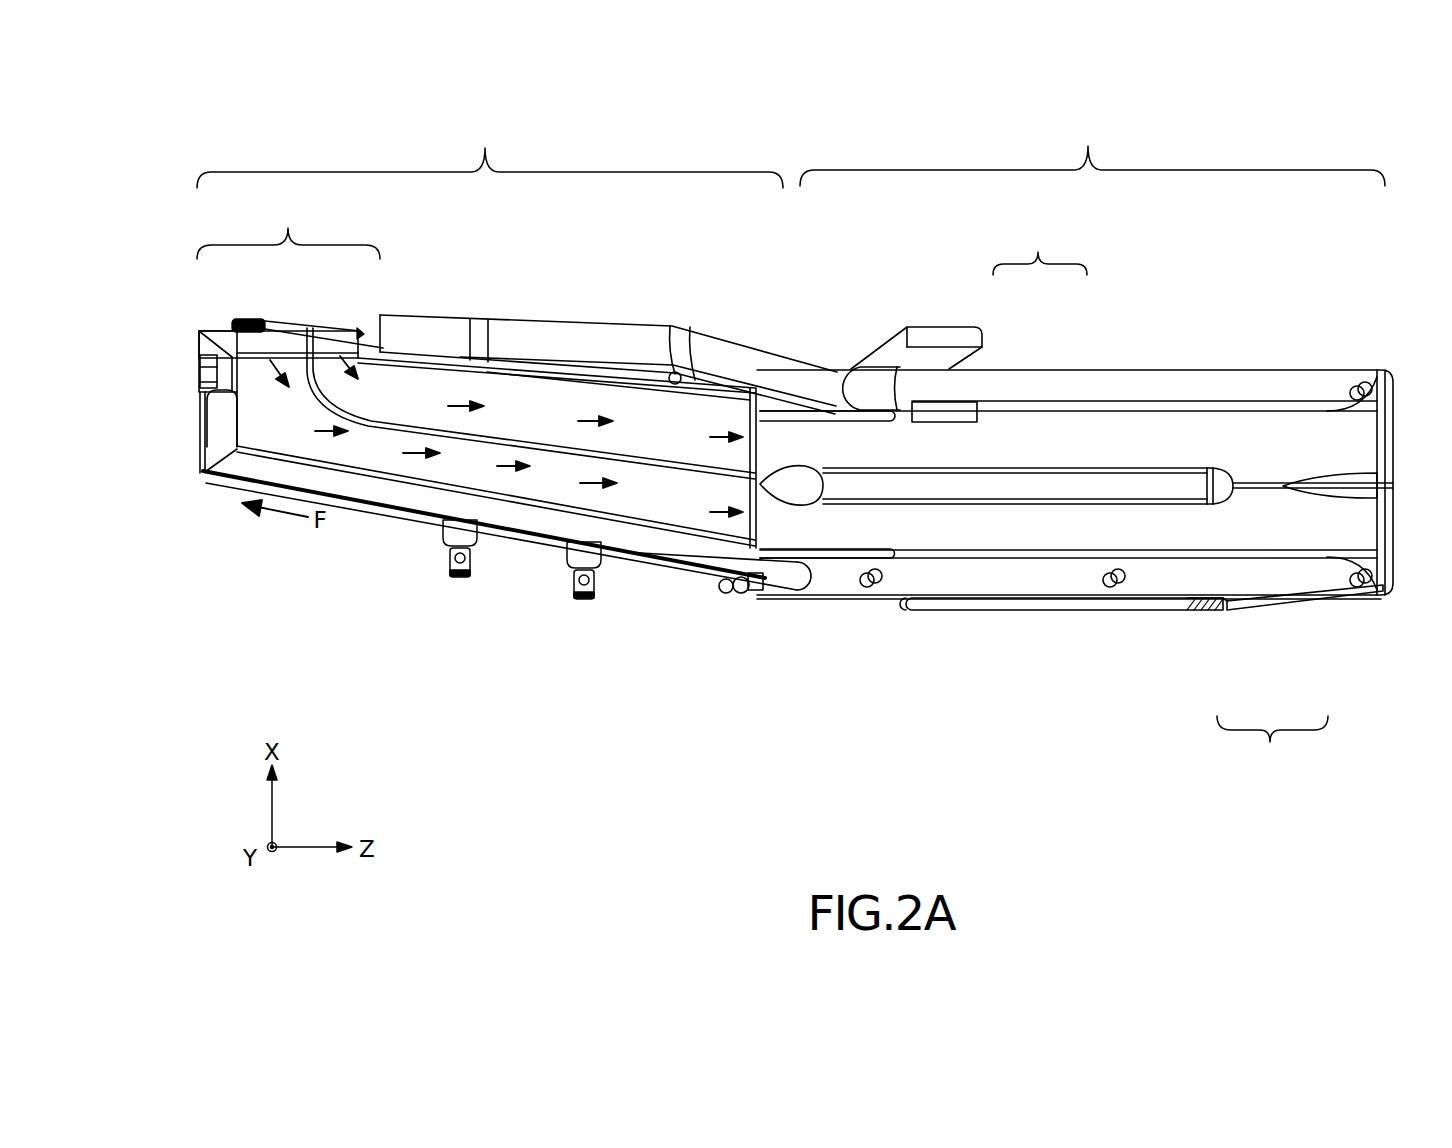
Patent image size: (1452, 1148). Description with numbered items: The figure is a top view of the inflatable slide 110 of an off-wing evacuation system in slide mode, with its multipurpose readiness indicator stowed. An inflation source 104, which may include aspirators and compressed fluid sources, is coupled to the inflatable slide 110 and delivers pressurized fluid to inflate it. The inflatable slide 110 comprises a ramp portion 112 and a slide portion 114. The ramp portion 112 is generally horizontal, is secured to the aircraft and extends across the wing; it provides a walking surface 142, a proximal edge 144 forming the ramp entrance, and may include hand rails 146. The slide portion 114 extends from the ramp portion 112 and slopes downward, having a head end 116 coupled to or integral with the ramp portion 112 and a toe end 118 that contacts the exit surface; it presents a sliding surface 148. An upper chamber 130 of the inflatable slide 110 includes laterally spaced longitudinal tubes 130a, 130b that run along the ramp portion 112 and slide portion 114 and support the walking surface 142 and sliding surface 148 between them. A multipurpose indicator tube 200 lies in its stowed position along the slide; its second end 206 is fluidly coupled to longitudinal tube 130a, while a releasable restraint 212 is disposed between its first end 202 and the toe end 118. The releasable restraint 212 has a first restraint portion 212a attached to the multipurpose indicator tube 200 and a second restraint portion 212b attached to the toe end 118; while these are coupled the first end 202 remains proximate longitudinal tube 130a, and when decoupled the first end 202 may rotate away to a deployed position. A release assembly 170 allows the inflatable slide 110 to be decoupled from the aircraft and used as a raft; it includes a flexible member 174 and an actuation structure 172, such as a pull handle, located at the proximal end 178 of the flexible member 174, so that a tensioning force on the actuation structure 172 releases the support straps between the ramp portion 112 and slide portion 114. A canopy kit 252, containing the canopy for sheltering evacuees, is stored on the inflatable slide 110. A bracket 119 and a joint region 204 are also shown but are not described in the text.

The inflatable slide 110 is at (258, 137).
The ramp portion 112 is at (490, 148).
The slide portion 114 is at (1092, 147).
The head end 116 is at (819, 530).
The toe end 118 is at (1397, 538).
The mounting bracket 119 is at (833, 372).
The upper chamber 130 is at (1040, 248).
The longitudinal tube 130a is at (787, 598).
The longitudinal tube 130b is at (622, 330).
The walking surface 142 is at (508, 423).
The proximal edge 144 is at (261, 396).
The hand rails 146 is at (418, 492).
The sliding surface 148 is at (1114, 533).
The inflation source 104 is at (456, 535).
The release assembly 170 is at (288, 229).
The actuation structure 172 is at (258, 319).
The flexible member 174 is at (319, 336).
The proximal end 178 is at (230, 326).
The multipurpose indicator tube 200 is at (1062, 608).
The first end 202 is at (1222, 588).
The hatched joint 204 is at (1190, 598).
The second end 206 is at (907, 608).
The releasable restraint 212 is at (1272, 745).
The first restraint portion 212a is at (1230, 612).
The second restraint portion 212b is at (1311, 604).
The canopy kit 252 is at (965, 424).